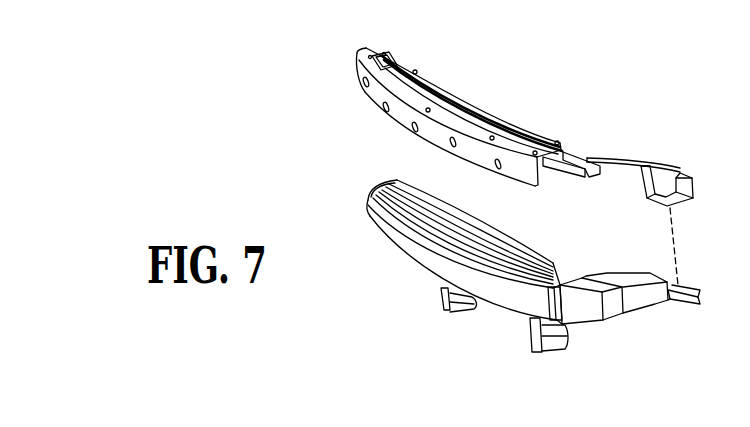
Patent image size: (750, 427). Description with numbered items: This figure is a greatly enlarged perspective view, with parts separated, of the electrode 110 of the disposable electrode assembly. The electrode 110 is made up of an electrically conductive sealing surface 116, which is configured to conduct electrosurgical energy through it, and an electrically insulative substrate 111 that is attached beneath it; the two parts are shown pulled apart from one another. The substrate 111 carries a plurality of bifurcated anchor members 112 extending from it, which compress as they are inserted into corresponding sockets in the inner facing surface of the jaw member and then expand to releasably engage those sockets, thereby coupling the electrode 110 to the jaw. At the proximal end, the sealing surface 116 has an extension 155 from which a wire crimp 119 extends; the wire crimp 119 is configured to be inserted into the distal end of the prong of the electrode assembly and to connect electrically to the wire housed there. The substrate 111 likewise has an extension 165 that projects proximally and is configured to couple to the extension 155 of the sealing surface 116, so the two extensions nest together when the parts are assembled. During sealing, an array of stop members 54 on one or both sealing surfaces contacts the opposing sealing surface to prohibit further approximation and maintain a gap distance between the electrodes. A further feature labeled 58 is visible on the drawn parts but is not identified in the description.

The electrode 110 is at (346, 170).
The electrically conductive sealing surface 116 is at (513, 130).
The stop members 54 is at (473, 103).
The rail 58 is at (398, 63).
The electrically insulative substrate 111 is at (397, 247).
The bifurcated anchor members 112 is at (441, 298).
The extension 155 is at (620, 157).
The wire crimp 119 is at (667, 168).
The extension 165 is at (655, 273).